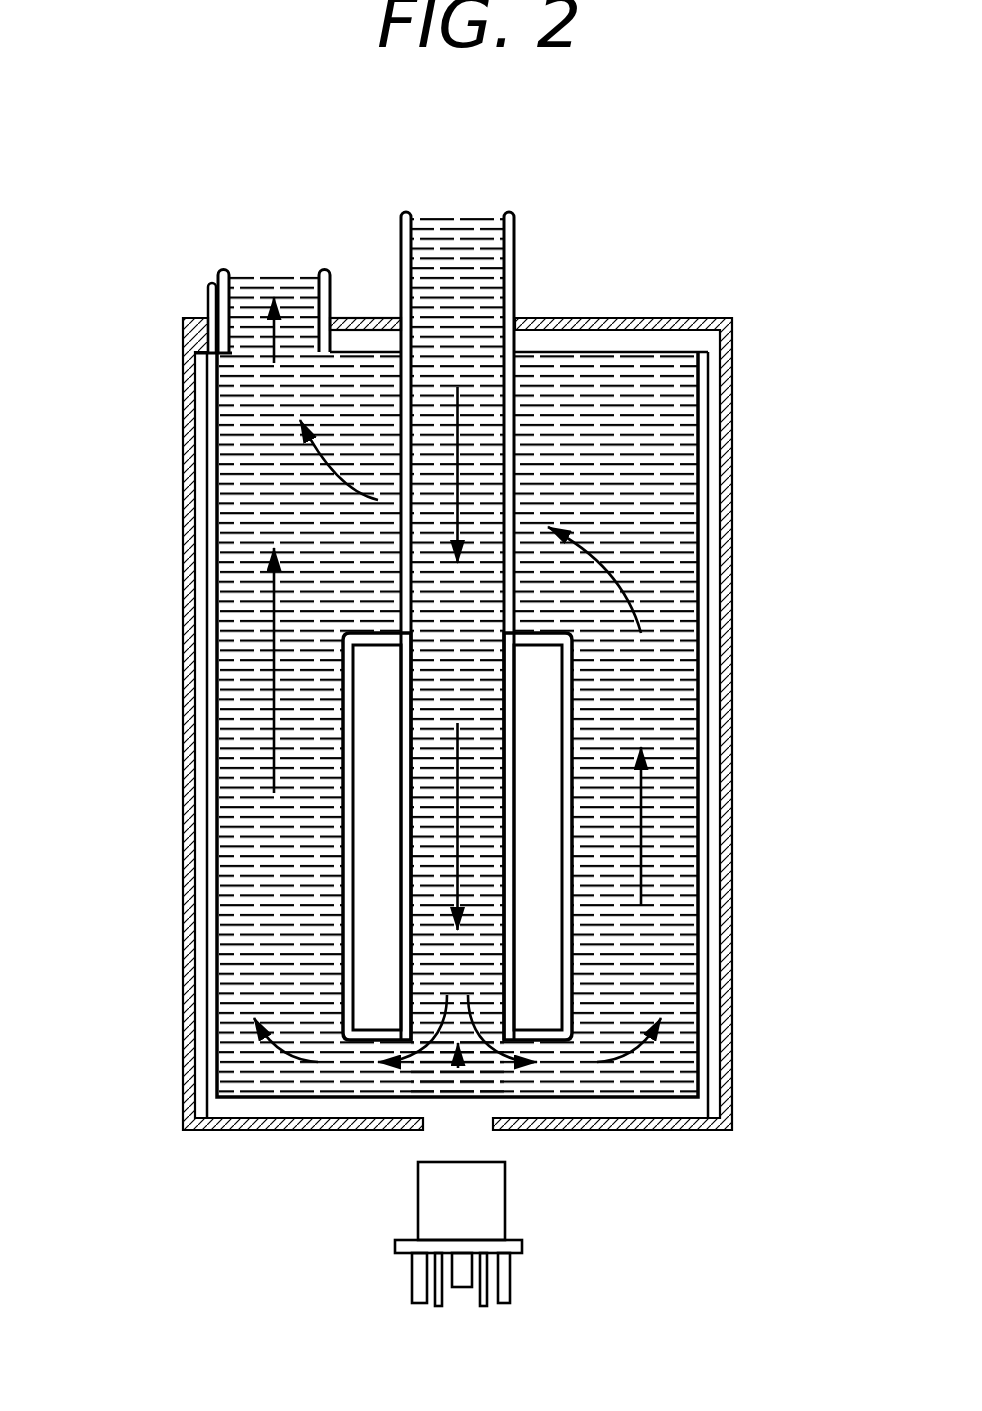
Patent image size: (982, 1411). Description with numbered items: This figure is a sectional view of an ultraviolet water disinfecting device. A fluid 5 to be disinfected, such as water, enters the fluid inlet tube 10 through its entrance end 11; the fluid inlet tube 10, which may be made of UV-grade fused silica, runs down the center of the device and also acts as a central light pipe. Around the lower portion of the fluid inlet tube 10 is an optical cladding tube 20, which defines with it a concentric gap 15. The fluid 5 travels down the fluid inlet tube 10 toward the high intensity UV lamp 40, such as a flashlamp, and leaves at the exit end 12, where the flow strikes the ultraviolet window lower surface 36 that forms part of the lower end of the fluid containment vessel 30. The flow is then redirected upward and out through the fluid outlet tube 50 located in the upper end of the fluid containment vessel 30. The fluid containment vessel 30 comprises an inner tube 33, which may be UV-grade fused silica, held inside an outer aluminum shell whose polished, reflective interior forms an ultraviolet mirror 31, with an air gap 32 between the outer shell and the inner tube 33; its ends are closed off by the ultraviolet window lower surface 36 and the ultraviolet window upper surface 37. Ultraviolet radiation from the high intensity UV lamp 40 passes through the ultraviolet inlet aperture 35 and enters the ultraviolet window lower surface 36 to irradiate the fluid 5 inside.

The fluid 5 is at (339, 596).
The fluid inlet tube 10 is at (367, 340).
The entrance end 11 is at (459, 205).
The exit end 12 is at (458, 1068).
The concentric gap 15 is at (377, 835).
The optical cladding tube 20 is at (347, 925).
The fluid containment vessel 30 is at (743, 453).
The ultraviolet mirror 31 is at (190, 452).
The air gap 32 is at (202, 498).
The inner tube 33 is at (210, 565).
The ultraviolet inlet aperture 35 is at (447, 1132).
The ultraviolet window lower surface 36 is at (226, 1108).
The ultraviolet window upper surface 37 is at (210, 327).
The high intensity UV lamp 40 is at (507, 1198).
The fluid outlet tube 50 is at (320, 270).